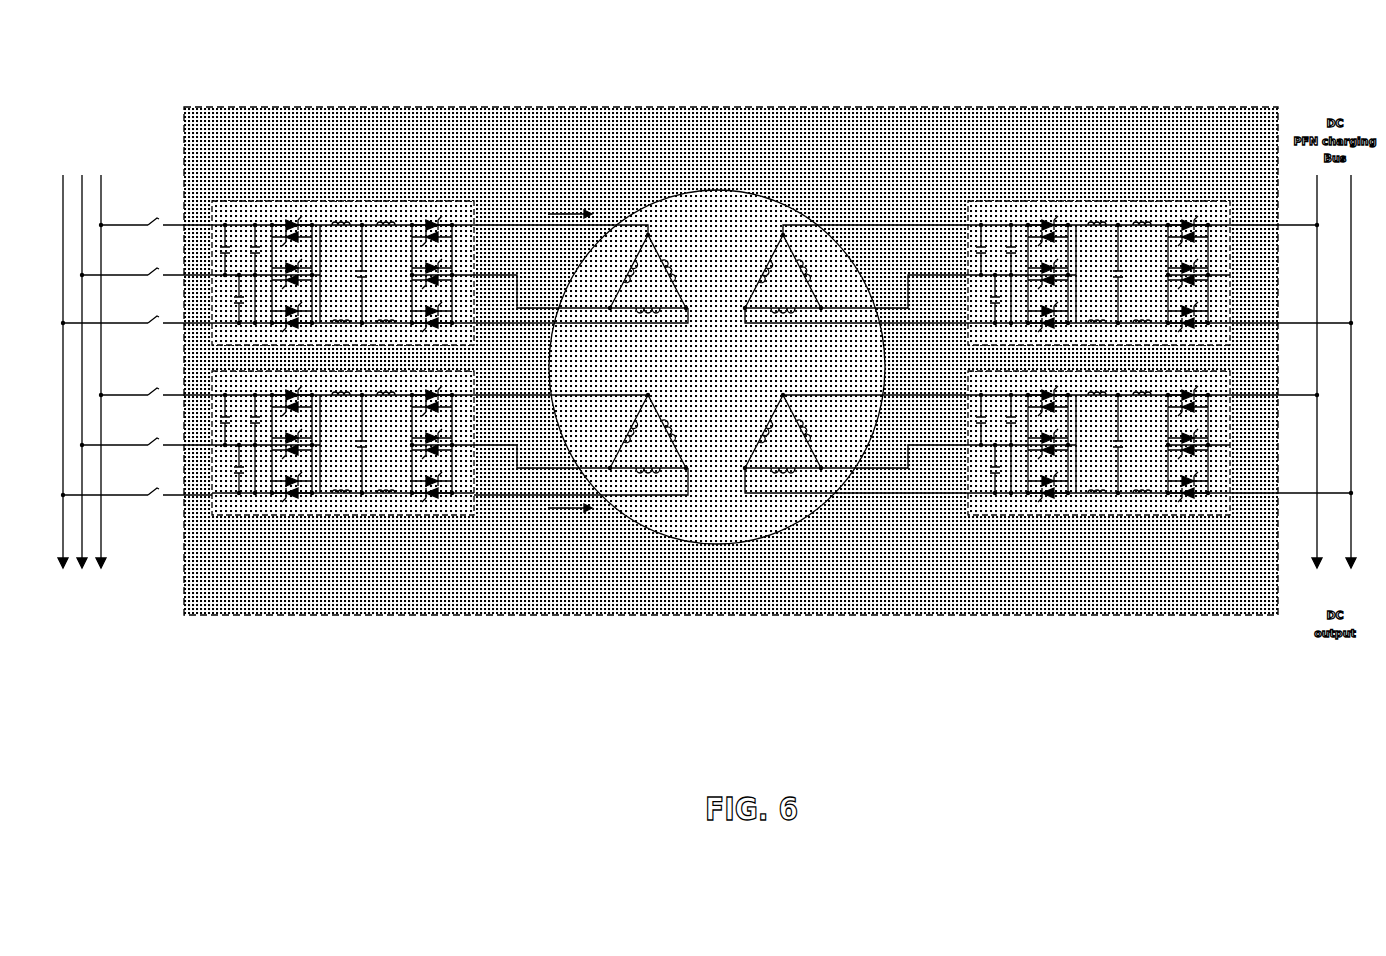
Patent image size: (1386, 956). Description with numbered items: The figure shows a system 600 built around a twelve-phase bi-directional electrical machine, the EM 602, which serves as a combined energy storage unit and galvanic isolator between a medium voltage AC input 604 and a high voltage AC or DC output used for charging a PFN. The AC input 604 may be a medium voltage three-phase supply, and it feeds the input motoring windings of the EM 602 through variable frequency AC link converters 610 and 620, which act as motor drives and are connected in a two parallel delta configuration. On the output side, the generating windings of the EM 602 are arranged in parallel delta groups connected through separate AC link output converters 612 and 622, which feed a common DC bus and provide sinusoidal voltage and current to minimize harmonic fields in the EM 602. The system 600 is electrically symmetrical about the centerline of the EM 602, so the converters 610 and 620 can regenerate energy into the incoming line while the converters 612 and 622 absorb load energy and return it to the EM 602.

The system 600 is at (965, 106).
The EM 602 is at (721, 334).
The AC input 604 is at (131, 334).
The AC link power converter 610 is at (343, 259).
The AC link output converter 612 is at (1099, 259).
The AC link power converter 620 is at (343, 381).
The AC link output converter 622 is at (1099, 381).